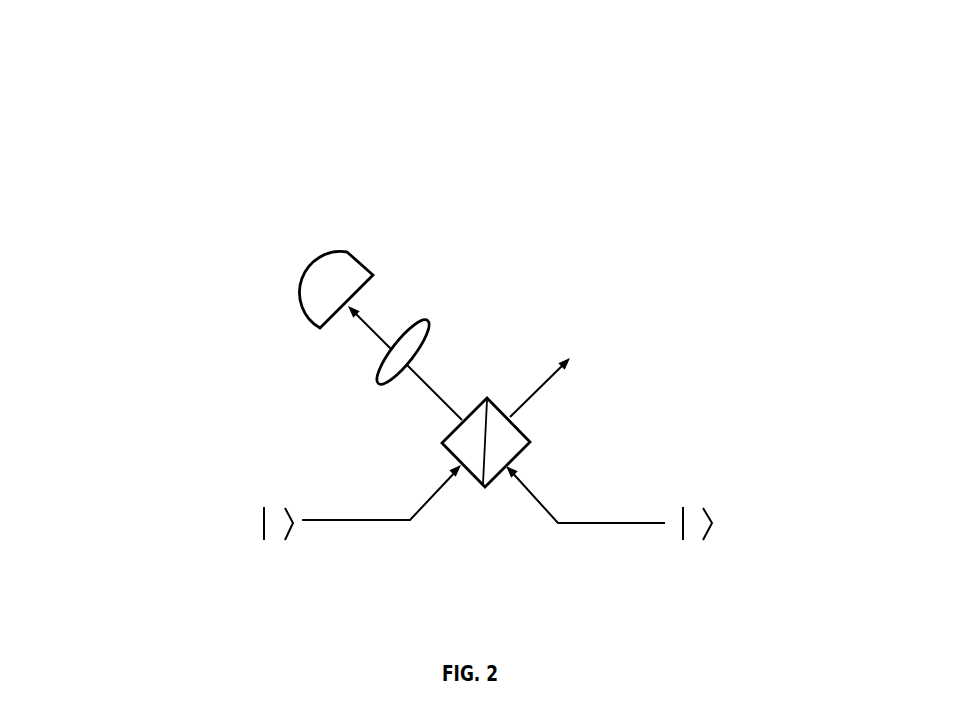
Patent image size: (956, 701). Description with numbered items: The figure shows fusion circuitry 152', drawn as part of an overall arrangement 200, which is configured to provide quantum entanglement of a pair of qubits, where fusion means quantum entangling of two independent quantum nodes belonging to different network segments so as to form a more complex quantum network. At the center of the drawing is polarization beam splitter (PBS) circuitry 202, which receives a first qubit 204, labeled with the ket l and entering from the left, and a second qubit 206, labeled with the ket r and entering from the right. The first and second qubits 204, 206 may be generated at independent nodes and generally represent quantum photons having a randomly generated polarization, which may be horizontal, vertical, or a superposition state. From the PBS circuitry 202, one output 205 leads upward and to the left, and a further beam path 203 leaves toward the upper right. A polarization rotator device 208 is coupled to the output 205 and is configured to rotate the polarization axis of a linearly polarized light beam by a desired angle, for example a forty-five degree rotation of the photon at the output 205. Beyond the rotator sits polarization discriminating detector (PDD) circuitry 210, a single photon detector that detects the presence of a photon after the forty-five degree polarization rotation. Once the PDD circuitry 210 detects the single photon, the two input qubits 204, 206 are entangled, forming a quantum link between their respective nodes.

The optical system 200 is at (853, 48).
The fusion circuitry 152' is at (217, 177).
The polarization beam splitter (PBS) circuitry 202 is at (531, 434).
The output beam 203 is at (543, 385).
The first qubit 204 is at (250, 525).
The output 205 is at (430, 393).
The second qubit 206 is at (722, 525).
The polarization rotator device 208 is at (381, 363).
The polarization discriminating detector (PDD) circuitry 210 is at (350, 252).